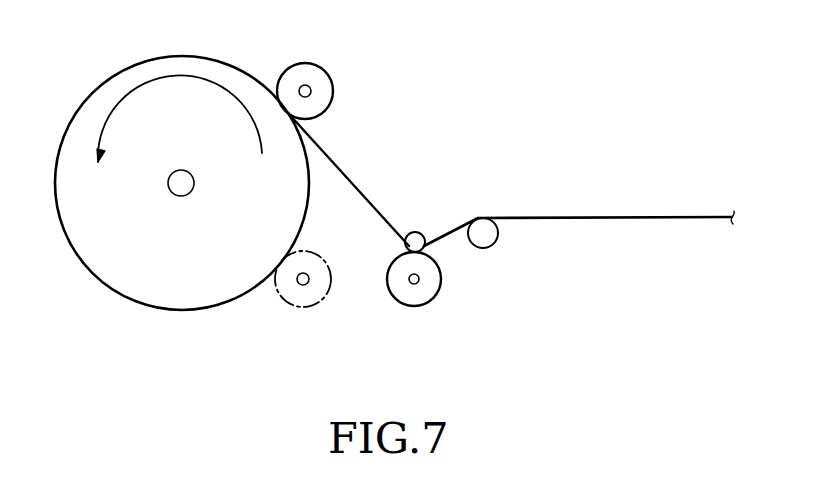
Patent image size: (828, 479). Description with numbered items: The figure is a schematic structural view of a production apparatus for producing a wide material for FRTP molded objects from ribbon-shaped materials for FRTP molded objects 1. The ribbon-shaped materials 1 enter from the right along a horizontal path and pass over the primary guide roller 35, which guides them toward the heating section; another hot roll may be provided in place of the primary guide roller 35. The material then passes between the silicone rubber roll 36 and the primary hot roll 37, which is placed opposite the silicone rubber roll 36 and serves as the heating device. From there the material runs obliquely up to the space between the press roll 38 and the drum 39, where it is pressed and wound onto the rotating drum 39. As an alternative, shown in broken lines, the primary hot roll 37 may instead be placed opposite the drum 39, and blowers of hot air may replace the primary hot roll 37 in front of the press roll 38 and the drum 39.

The drum 39 is at (80, 262).
The press roll 38 is at (325, 63).
The primary hot roll 37 is at (427, 305).
The silicone rubber roll 36 is at (418, 226).
The primary guide roller 35 is at (500, 237).
The ribbon-shaped materials for FRTP molded objects 1 is at (558, 217).